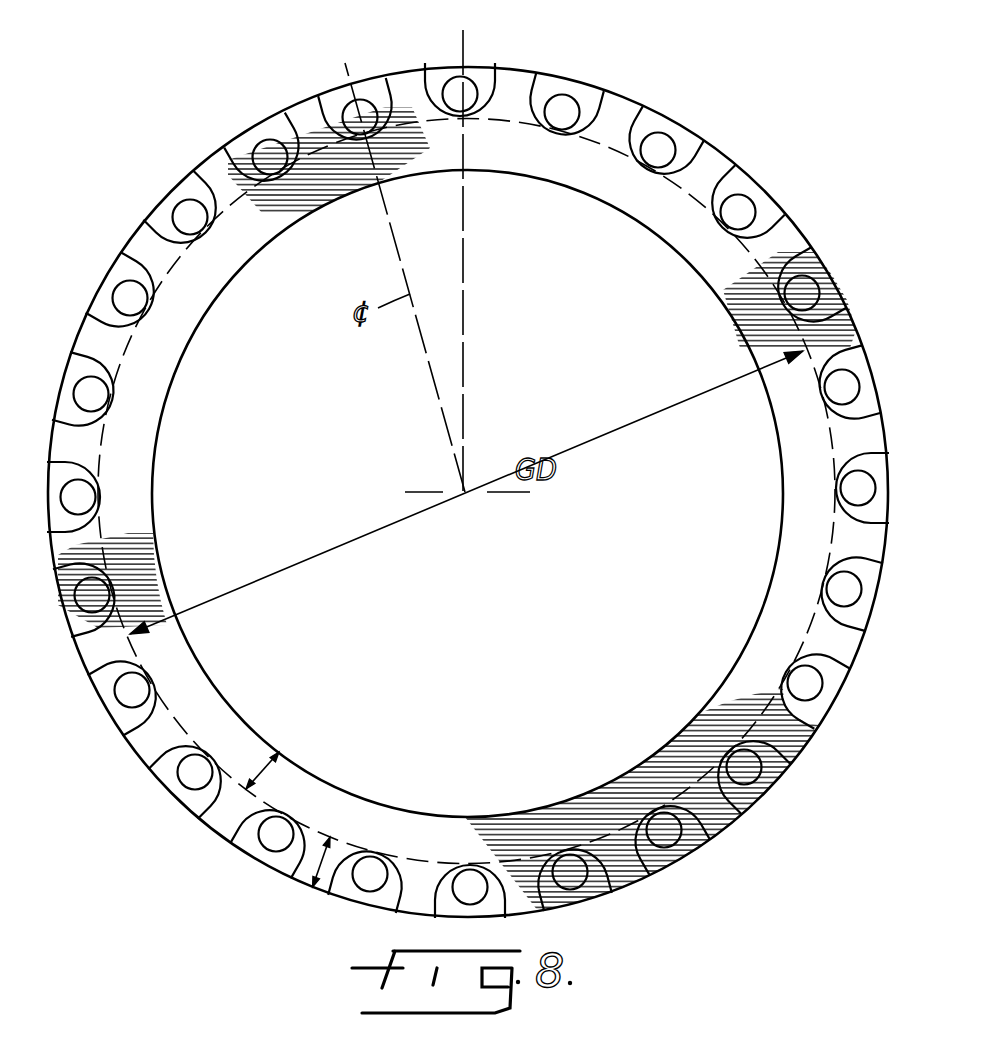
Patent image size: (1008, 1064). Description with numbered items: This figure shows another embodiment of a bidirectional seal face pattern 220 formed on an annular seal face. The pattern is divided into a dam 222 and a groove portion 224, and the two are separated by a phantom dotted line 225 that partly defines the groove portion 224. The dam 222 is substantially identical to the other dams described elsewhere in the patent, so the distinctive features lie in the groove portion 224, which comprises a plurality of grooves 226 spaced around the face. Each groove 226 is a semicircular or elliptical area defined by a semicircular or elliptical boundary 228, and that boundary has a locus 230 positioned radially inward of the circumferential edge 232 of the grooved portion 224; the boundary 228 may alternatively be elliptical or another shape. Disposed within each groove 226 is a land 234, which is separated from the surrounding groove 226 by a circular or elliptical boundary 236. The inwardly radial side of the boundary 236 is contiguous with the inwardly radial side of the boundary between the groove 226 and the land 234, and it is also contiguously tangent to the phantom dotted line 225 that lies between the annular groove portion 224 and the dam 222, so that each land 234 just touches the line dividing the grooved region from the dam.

The bidirectional seal face pattern 220 is at (842, 333).
The dam 222 is at (265, 776).
The groove portion 224 is at (312, 862).
The phantom dotted line 225 is at (763, 260).
The groove 226 is at (338, 98).
The semicircular or elliptical boundary 228 is at (364, 99).
The locus 230 is at (355, 99).
The circumferential edge 232 is at (730, 152).
The land 234 is at (254, 150).
The circular or elliptical boundary 236 is at (270, 138).